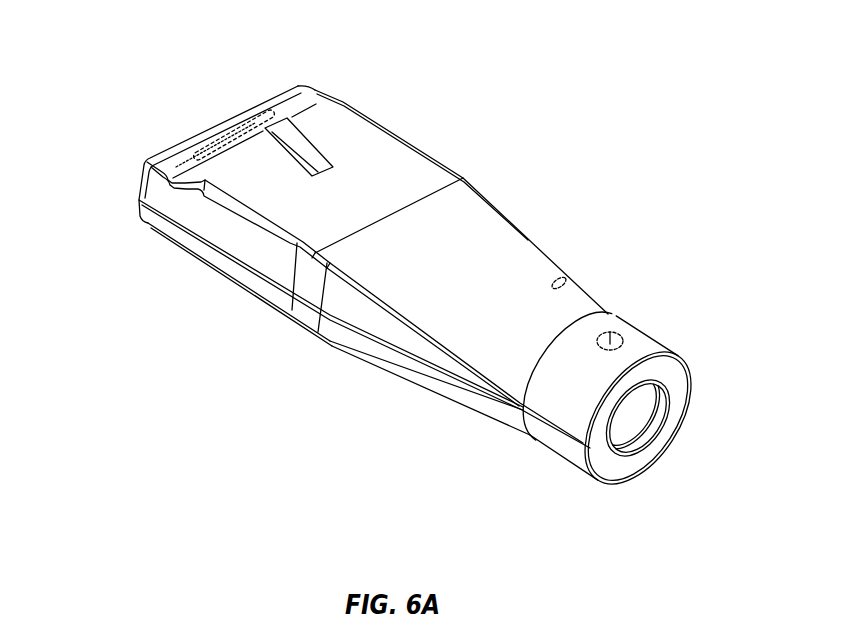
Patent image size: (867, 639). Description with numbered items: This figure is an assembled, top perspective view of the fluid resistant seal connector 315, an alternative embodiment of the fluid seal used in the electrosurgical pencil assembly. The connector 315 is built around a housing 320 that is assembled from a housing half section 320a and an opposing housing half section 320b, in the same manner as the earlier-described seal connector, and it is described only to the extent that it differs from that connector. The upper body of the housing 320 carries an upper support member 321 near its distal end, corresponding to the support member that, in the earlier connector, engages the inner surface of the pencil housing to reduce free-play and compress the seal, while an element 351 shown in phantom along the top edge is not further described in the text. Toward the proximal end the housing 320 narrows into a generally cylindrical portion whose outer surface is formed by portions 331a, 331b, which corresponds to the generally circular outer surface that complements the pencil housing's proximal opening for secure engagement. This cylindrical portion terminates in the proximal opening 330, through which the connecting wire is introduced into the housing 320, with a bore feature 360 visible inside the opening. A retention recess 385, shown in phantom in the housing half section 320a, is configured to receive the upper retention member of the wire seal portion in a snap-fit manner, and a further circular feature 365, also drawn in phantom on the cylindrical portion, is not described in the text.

The fluid resistant seal connector 315 is at (130, 58).
The housing 320 is at (414, 140).
The housing half section 320a is at (497, 258).
The tapered lower surface of housing 320b is at (346, 337).
The latch tab 321 is at (312, 152).
The hidden slot 351 is at (236, 122).
The retention recess 385 is at (567, 278).
The locking hole 365 is at (614, 333).
The upper cylindrical portion 331a is at (645, 353).
The lower cylindrical portion 331b is at (553, 443).
The bore opening 360 is at (665, 413).
The proximal opening 330 is at (622, 421).